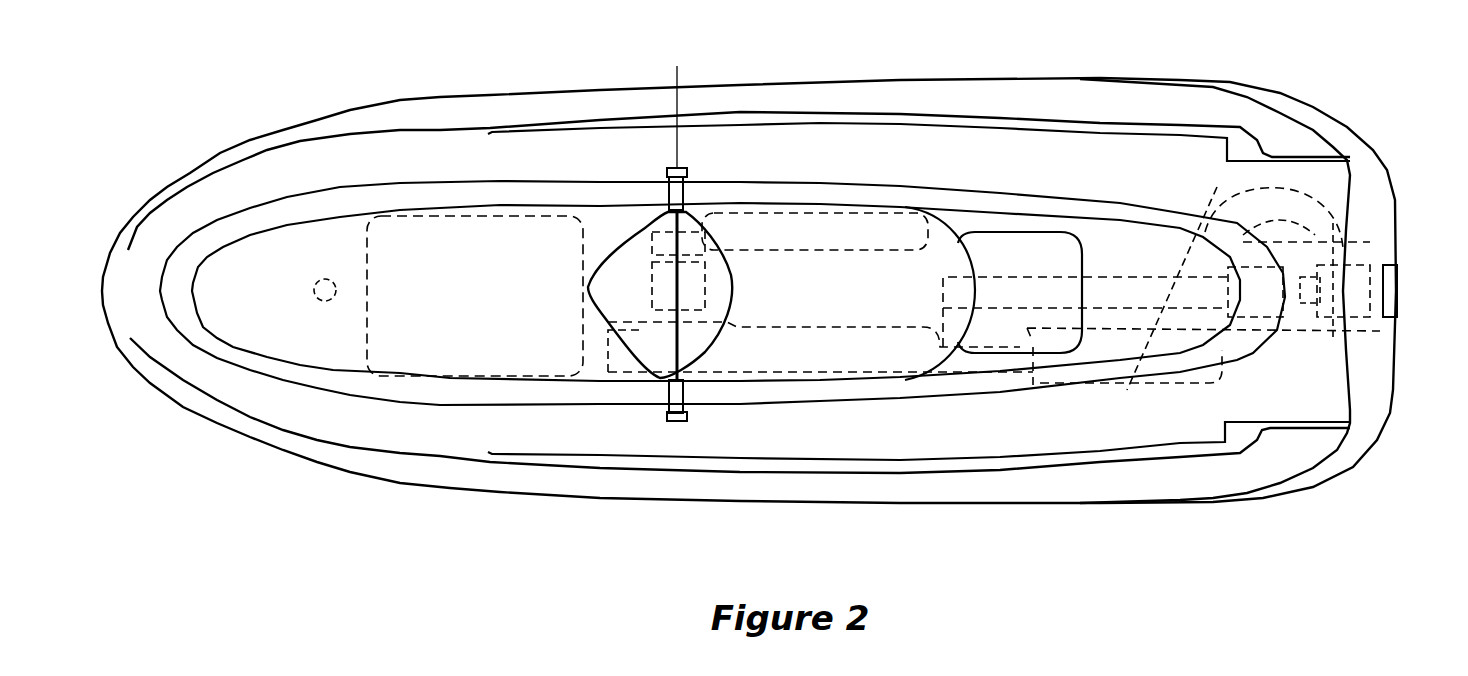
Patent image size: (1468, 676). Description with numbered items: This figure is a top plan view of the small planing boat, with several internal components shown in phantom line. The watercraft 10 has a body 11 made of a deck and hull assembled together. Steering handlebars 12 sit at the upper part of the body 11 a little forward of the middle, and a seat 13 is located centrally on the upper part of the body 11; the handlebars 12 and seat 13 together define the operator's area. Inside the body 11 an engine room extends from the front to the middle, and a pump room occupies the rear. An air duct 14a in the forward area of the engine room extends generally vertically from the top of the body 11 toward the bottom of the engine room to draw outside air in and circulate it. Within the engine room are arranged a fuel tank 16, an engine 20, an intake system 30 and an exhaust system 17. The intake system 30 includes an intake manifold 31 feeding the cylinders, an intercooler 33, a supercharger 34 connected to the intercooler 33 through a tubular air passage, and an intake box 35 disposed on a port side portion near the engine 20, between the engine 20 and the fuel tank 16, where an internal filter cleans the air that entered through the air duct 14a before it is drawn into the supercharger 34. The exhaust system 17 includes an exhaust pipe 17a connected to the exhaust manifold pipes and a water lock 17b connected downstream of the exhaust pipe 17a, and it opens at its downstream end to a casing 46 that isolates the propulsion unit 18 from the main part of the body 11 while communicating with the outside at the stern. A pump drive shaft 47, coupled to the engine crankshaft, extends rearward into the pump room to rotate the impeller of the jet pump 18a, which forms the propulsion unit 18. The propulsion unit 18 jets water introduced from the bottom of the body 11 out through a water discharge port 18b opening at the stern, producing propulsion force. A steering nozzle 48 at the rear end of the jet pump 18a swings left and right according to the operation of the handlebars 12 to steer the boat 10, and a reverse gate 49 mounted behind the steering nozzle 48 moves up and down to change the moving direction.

The watercraft 10 is at (1188, 62).
The body 11 is at (272, 125).
The steering handlebars 12 is at (677, 229).
The seat 13 is at (935, 212).
The air duct 14a is at (324, 302).
The fuel tank 16 is at (476, 380).
The exhaust system 17 is at (777, 360).
The exhaust pipe 17a is at (836, 376).
The water lock 17b is at (1137, 386).
The propulsion unit 18 is at (1293, 328).
The jet pump 18a is at (1258, 315).
The water discharge port 18b is at (1316, 302).
The engine 20 is at (918, 264).
The intake system 30 is at (637, 376).
The intake manifold 31 is at (818, 222).
The intercooler 33 is at (643, 243).
The supercharger 34 is at (652, 288).
The intake box 35 is at (608, 352).
The casing 46 is at (1385, 258).
The pump drive shaft 47 is at (1092, 275).
The steering nozzle 48 is at (1372, 318).
The reverse gate 49 is at (1397, 293).